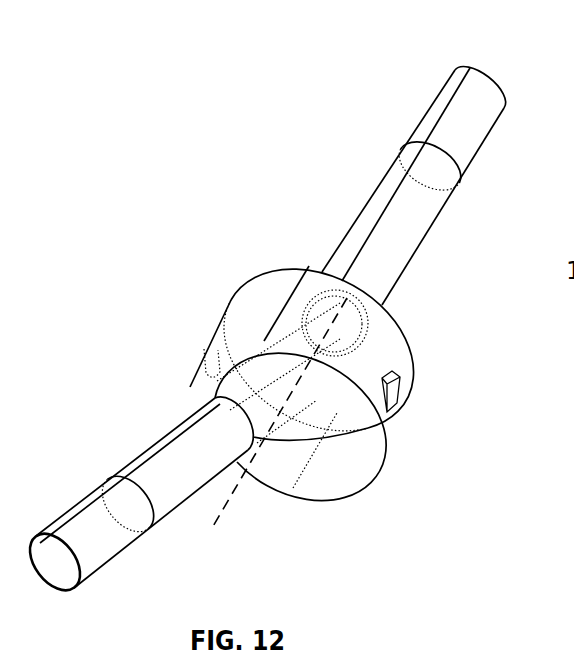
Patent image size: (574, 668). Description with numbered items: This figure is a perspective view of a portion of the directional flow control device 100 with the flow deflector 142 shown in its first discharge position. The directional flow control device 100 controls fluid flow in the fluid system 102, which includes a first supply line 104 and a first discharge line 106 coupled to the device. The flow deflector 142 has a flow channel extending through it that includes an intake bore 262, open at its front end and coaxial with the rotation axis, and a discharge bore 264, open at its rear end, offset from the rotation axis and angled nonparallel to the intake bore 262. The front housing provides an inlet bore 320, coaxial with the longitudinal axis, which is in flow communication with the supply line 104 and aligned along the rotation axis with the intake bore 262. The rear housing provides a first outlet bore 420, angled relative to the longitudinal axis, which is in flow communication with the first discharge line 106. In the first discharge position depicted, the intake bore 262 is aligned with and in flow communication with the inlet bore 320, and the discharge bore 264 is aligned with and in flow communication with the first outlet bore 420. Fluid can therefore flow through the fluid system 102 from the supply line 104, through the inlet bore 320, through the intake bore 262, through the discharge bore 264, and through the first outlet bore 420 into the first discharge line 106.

The directional flow control device 100 is at (162, 178).
The fluid system 102 is at (403, 64).
The first supply line 104 is at (475, 125).
The first discharge line 106 is at (93, 550).
The flow deflector 142 is at (232, 330).
The intake bore 262 is at (356, 327).
The discharge bore 264 is at (244, 397).
The inlet bore 320 is at (413, 235).
The first outlet bore 420 is at (170, 492).